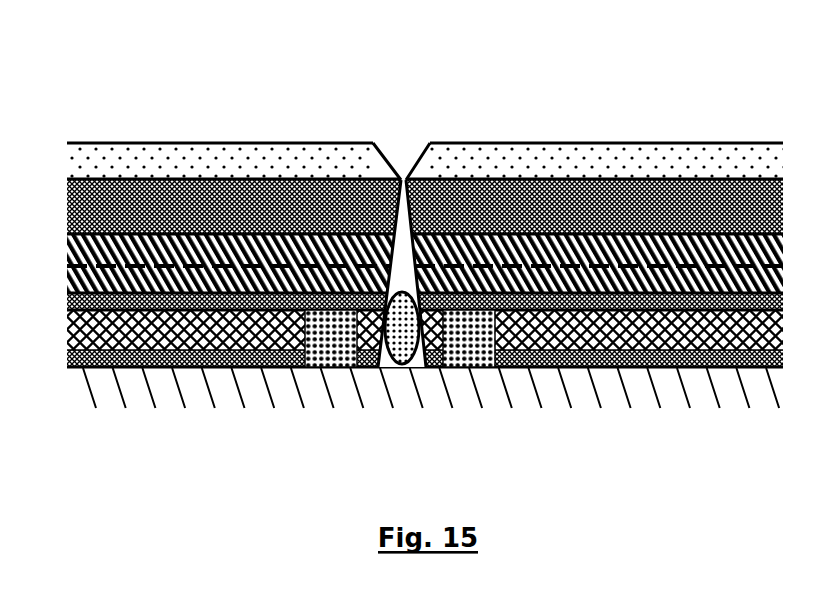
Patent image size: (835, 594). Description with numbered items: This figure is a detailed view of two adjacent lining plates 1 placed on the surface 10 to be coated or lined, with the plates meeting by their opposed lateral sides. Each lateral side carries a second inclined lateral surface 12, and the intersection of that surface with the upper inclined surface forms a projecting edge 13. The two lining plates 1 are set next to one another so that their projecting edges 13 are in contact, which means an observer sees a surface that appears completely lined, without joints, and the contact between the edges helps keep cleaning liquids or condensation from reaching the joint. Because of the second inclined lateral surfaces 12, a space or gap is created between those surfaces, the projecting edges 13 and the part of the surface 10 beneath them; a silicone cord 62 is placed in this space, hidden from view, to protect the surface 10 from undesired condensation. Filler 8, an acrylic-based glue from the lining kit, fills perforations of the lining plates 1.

The lining plate 1 is at (199, 78).
The filler 8 is at (318, 368).
The surface 10 is at (704, 384).
The second inclined lateral surface 12 is at (391, 293).
The projecting edge 13 is at (402, 181).
The silicone cord 62 is at (396, 366).